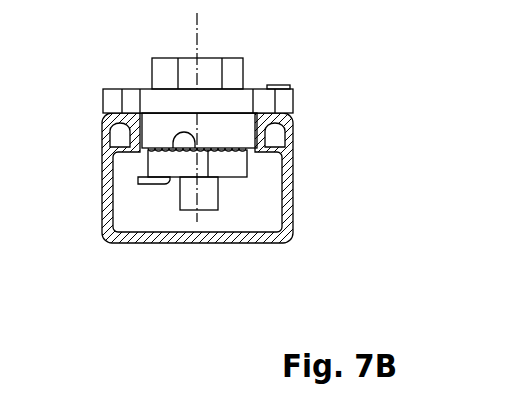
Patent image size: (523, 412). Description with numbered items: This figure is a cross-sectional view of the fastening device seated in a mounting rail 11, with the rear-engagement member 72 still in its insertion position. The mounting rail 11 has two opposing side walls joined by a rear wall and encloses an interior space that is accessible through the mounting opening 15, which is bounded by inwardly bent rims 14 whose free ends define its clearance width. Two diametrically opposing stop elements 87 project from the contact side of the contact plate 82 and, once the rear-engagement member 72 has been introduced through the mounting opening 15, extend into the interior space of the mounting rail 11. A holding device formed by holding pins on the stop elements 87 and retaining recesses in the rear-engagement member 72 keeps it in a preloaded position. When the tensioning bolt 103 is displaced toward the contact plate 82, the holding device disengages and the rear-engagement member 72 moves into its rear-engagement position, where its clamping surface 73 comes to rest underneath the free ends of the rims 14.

The mounting rail 11 is at (314, 217).
The rims 14 is at (128, 130).
The mounting opening 15 is at (237, 128).
The rear-engagement member 72 is at (230, 167).
The clamping surface 73 is at (192, 137).
The contact plate 82 is at (263, 103).
The stop elements 87 is at (165, 127).
The tensioning bolt 103 is at (212, 70).